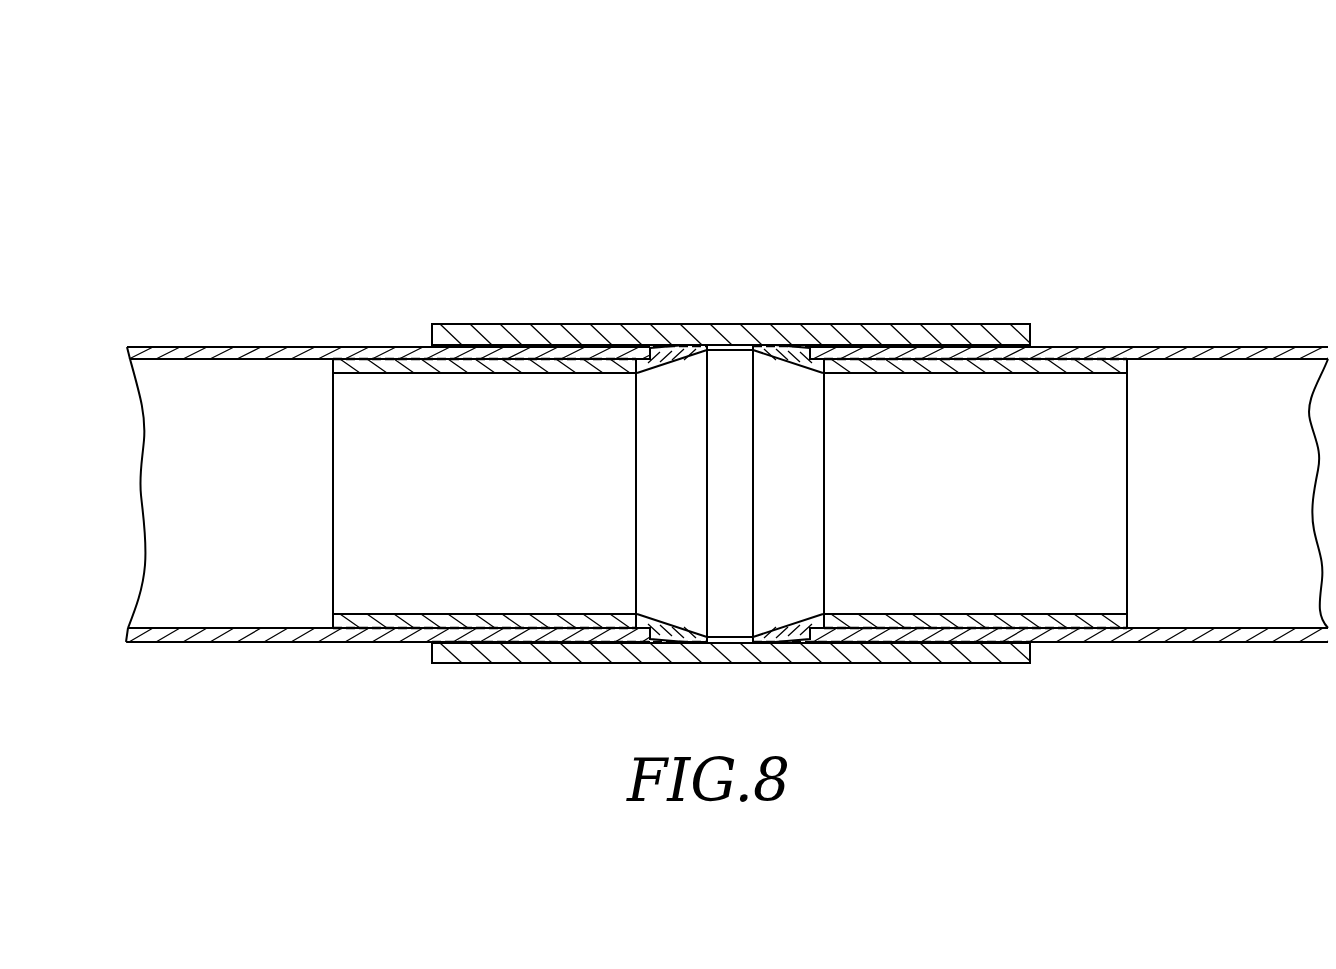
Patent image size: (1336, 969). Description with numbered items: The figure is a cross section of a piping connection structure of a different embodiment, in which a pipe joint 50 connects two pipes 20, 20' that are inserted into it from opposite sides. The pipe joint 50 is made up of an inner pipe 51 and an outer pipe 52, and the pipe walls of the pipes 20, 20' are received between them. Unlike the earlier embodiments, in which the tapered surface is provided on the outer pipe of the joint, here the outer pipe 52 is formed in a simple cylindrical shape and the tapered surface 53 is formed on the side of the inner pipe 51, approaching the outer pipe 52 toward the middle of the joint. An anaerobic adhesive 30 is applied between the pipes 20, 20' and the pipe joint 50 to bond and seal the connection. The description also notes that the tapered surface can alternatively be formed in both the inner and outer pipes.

The pipe 20 is at (1069, 402).
The pipe 20' is at (388, 436).
The anaerobic adhesive 30 is at (520, 355).
The pipe joint 50 is at (925, 162).
The inner pipe 51 is at (376, 353).
The outer pipe 52 is at (592, 325).
The tapered surface 53 is at (687, 350).